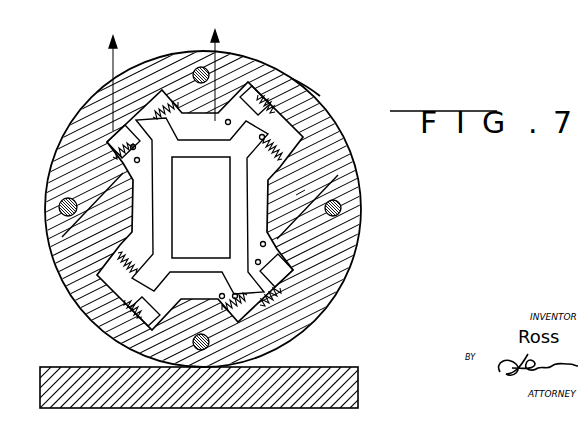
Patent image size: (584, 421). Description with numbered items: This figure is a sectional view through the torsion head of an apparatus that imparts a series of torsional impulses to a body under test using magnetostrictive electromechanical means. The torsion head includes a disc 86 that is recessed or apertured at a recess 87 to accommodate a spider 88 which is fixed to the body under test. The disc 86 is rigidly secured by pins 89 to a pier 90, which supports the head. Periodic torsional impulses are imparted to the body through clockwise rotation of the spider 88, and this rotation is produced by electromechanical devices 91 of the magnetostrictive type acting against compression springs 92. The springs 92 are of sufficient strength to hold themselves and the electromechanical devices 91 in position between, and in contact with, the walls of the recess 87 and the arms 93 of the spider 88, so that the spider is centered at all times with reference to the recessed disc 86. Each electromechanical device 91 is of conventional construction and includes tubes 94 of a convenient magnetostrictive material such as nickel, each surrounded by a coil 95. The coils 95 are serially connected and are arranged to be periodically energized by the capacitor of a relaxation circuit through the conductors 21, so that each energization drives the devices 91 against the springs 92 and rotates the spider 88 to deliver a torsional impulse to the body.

The conductors 21 is at (213, 44).
The disc 86 is at (291, 79).
The recess 87 is at (321, 181).
The spider 88 is at (194, 148).
The pins 89 is at (193, 343).
The pier 90 is at (68, 376).
The electromechanical devices 91 is at (294, 262).
The compression springs 92 is at (255, 311).
The arms 93 is at (279, 295).
The tubes 94 is at (246, 263).
The coil 95 is at (263, 246).